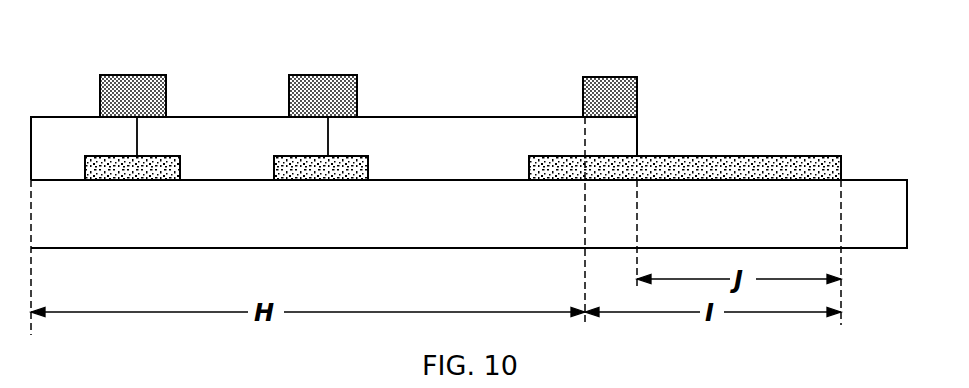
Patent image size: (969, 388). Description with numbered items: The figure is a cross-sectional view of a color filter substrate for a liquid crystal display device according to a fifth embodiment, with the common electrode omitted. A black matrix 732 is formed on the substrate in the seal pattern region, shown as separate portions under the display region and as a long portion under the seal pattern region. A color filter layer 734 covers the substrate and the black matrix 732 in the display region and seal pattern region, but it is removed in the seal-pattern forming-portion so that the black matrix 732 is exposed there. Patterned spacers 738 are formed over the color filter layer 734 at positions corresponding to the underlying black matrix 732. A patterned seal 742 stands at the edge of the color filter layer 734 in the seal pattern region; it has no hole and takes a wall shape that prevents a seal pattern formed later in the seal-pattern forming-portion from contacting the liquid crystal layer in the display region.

The black matrix 732 is at (153, 170).
The color filter layer 734 is at (55, 133).
The patterned spacers 738 is at (133, 88).
The patterned seal 742 is at (608, 95).